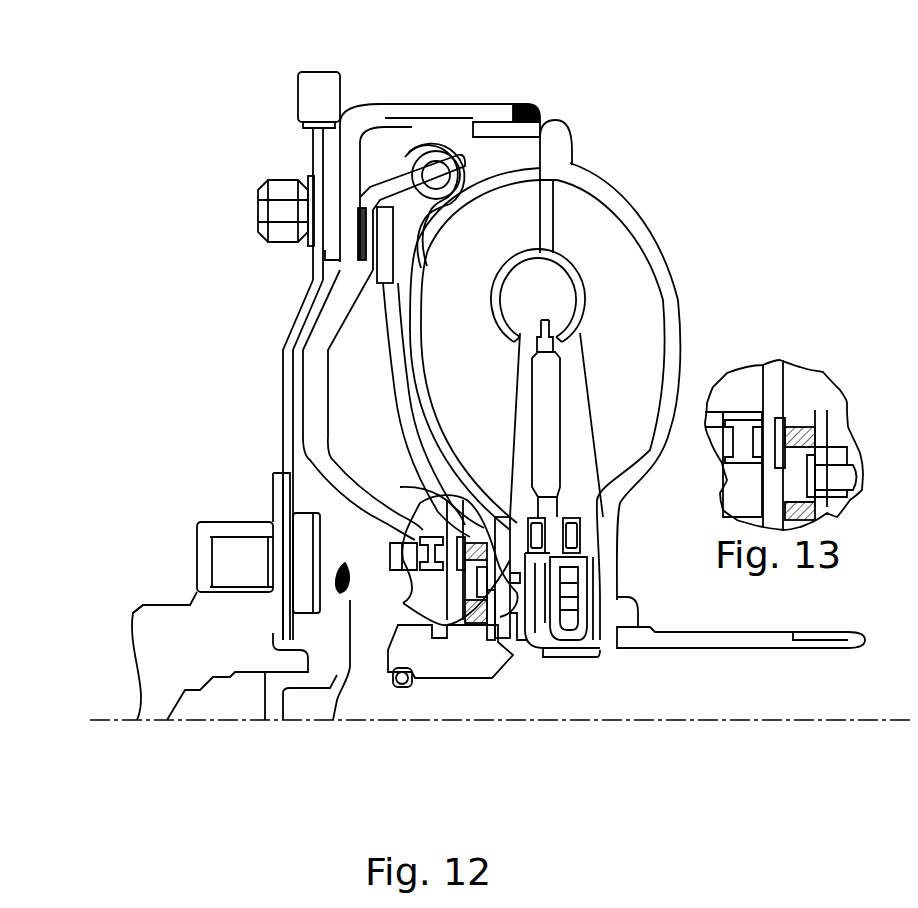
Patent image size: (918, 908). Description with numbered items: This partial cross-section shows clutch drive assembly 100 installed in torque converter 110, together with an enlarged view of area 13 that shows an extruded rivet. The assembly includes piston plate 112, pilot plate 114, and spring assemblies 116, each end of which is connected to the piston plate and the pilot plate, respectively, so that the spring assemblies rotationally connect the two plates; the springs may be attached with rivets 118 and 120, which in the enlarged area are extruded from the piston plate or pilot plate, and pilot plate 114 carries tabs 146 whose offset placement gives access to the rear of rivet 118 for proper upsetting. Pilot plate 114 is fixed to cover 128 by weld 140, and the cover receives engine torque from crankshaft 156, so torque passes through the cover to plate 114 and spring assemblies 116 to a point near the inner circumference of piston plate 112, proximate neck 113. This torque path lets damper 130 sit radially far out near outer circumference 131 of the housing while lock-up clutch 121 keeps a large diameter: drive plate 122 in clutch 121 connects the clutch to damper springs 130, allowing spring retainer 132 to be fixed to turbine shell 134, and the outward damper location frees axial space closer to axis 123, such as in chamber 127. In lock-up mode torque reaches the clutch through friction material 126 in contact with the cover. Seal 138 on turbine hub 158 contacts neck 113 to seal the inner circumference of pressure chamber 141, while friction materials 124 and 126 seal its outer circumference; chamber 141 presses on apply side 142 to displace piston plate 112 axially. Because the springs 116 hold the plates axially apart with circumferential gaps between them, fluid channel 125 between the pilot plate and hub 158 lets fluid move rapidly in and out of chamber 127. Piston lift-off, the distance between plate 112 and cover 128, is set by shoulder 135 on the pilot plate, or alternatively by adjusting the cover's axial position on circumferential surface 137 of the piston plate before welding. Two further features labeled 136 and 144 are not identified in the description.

The area 13 is at (523, 650).
The clutch drive assembly 100 is at (381, 478).
The torque converter 110 is at (722, 96).
The piston plate 112 is at (388, 323).
The neck 113 is at (480, 622).
The pilot plate 114 is at (336, 688).
The spring assemblies 116 is at (507, 510).
The rivet 118 is at (287, 538).
The rivet 120 is at (283, 470).
The lock-up clutch 121 is at (323, 188).
The drive plate 122 is at (348, 196).
The axis 123 is at (784, 722).
The friction material 124 is at (372, 270).
The fluid channel 125 is at (410, 648).
The friction material 126 is at (358, 212).
The chamber 127 is at (397, 437).
The cover 128 is at (369, 101).
The damper springs 130 is at (407, 152).
The outer circumference 131 is at (440, 104).
The spring retainer 132 is at (455, 128).
The turbine shell 134 is at (517, 168).
The shoulder 135 is at (401, 605).
The bell housing 136 is at (652, 225).
The circumferential surface 137 is at (333, 553).
The seal 138 is at (437, 640).
The weld 140 is at (333, 583).
The pressure chamber 141 is at (492, 485).
The apply side 142 is at (418, 390).
The wall 144 is at (391, 393).
The tabs 146 is at (400, 548).
The crankshaft 156 is at (158, 655).
The turbine hub 158 is at (410, 688).